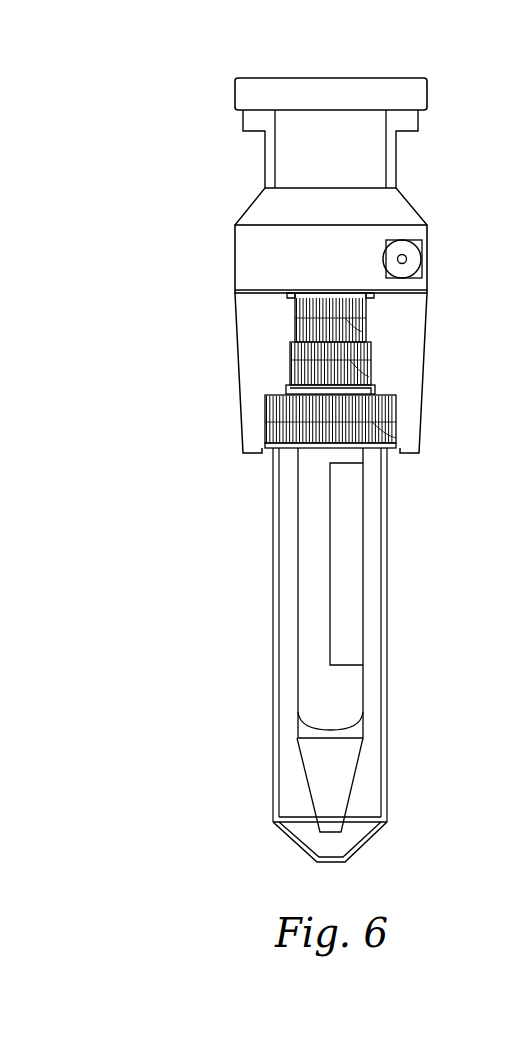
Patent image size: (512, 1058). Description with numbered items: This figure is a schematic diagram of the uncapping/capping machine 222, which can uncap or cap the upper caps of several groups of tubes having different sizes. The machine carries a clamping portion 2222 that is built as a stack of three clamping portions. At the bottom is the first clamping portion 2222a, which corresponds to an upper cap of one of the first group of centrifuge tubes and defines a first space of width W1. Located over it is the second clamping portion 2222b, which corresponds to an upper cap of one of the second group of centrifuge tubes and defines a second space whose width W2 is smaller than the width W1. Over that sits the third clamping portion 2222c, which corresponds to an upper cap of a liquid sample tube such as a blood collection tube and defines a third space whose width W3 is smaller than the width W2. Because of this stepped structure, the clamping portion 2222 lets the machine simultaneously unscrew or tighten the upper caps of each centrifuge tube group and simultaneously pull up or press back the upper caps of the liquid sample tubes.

The uncapping/capping machine 222 is at (113, 67).
The clamping portion 2222 is at (98, 315).
The first clamping portion 2222a is at (252, 422).
The second clamping portion 2222b is at (277, 360).
The third clamping portion 2222c is at (282, 317).
The width of first space W1 is at (396, 438).
The width of second space W2 is at (367, 377).
The width of third space W3 is at (363, 332).